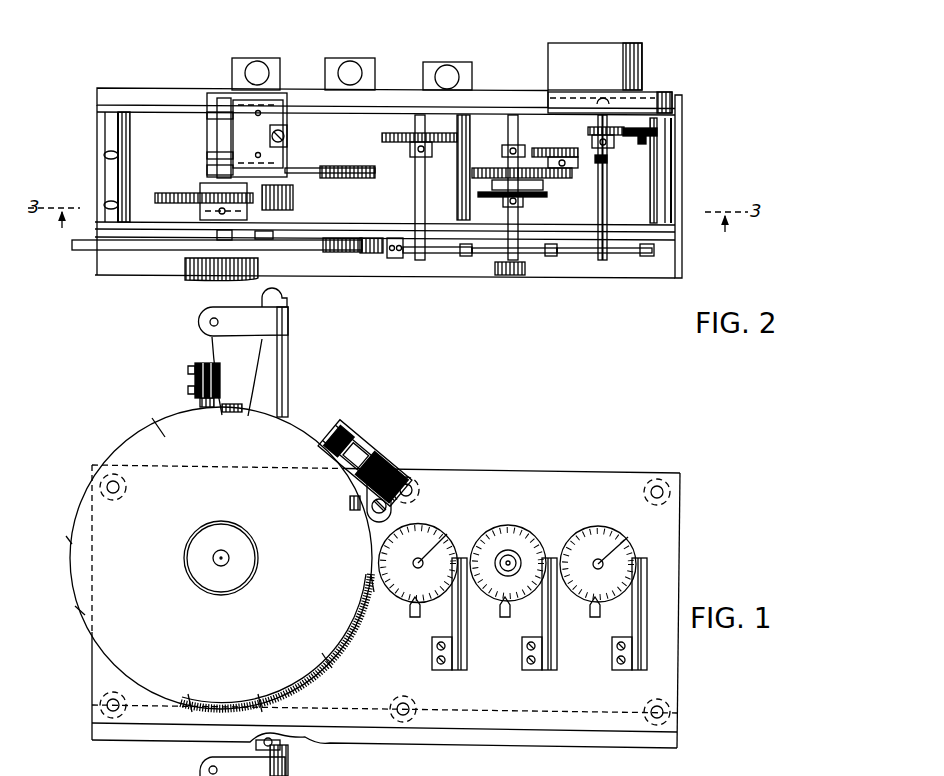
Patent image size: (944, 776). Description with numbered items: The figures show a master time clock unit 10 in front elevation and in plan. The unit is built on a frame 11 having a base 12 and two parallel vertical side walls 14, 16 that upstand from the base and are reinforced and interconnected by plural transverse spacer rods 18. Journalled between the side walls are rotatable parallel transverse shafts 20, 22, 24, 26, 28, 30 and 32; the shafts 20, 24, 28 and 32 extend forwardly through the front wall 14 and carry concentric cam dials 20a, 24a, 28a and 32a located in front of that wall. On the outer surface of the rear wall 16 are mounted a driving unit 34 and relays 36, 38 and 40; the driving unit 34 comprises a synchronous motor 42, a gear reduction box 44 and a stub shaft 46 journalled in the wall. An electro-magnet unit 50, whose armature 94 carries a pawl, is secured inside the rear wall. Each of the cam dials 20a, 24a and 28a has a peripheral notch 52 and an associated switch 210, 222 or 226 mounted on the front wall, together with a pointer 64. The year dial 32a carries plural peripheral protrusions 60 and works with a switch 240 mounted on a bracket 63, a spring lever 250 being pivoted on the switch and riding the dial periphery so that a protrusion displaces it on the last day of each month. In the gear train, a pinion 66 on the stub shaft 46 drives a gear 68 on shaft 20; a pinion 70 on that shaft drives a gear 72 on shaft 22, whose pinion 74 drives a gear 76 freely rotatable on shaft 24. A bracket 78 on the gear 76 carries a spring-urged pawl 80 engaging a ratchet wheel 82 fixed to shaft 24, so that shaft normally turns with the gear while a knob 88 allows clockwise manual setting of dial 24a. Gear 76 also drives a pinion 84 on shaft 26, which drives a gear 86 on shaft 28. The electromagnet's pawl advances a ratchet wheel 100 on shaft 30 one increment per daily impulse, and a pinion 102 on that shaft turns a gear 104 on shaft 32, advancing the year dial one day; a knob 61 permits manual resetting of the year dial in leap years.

In FIG. 2, the master time clock unit 10 is at (658, 280).
In FIG. 1, the master time clock unit 10 is at (575, 466).
In FIG. 2, the frame 11 is at (578, 293).
In FIG. 1, the frame 11 is at (682, 490).
In FIG. 2, the base 12 is at (668, 258).
In FIG. 1, the base 12 is at (660, 748).
In FIG. 2, the side wall 14 is at (668, 226).
In FIG. 1, the side wall 14 is at (672, 528).
In FIG. 2, the side wall 16 is at (672, 122).
In FIG. 2, the transverse spacer rods 18 is at (112, 152).
In FIG. 1, the transverse spacer rods 18 is at (105, 706).
In FIG. 2, the shaft 20 is at (607, 202).
In FIG. 1, the shaft 20 is at (640, 533).
In FIG. 2, the cam dial 20a is at (625, 257).
In FIG. 1, the cam dial 20a is at (590, 527).
In FIG. 2, the shaft 22 is at (566, 190).
In FIG. 2, the shaft 24 is at (519, 207).
In FIG. 1, the shaft 24 is at (538, 533).
In FIG. 2, the cam dial 24a is at (525, 257).
In FIG. 1, the cam dial 24a is at (495, 528).
In FIG. 2, the shaft 26 is at (462, 186).
In FIG. 2, the shaft 28 is at (415, 181).
In FIG. 1, the shaft 28 is at (447, 534).
In FIG. 2, the cam dial 28a is at (440, 257).
In FIG. 1, the cam dial 28a is at (418, 525).
In FIG. 2, the shaft 30 is at (282, 234).
In FIG. 2, the shaft 32 is at (218, 237).
In FIG. 1, the shaft 32 is at (221, 558).
In FIG. 2, the cam dial 32a is at (82, 247).
In FIG. 1, the cam dial 32a is at (348, 652).
In FIG. 2, the driving unit 34 is at (650, 50).
In FIG. 2, the relay 36 is at (432, 62).
In FIG. 2, the relay 38 is at (340, 58).
In FIG. 2, the relay 40 is at (246, 58).
In FIG. 2, the synchronous motor 42 is at (570, 45).
In FIG. 2, the gear reduction box 44 is at (655, 92).
In FIG. 2, the stub shaft 46 is at (646, 144).
In FIG. 2, the electro-magnet unit 50 is at (285, 97).
In FIG. 1, the electro-magnet unit 50 is at (288, 376).
In FIG. 1, the notch 52 is at (508, 531).
In FIG. 1, the protrusions 60 is at (158, 428).
In FIG. 2, the knob 61 is at (195, 279).
In FIG. 1, the knob 61 is at (203, 580).
In FIG. 1, the bracket 63 is at (392, 504).
In FIG. 1, the pointer 64 is at (414, 620).
In FIG. 2, the pinion 66 is at (628, 137).
In FIG. 2, the gear 68 is at (585, 131).
In FIG. 2, the pinion 70 is at (608, 163).
In FIG. 2, the gear 72 is at (552, 150).
In FIG. 2, the pinion 74 is at (572, 172).
In FIG. 2, the gear 76 is at (480, 168).
In FIG. 2, the bracket 78 is at (520, 168).
In FIG. 2, the pawl 80 is at (520, 184).
In FIG. 2, the ratchet wheel 82 is at (478, 194).
In FIG. 2, the pinion 84 is at (443, 150).
In FIG. 2, the gear 86 is at (382, 150).
In FIG. 2, the knob 88 is at (510, 277).
In FIG. 1, the knob 88 is at (512, 560).
In FIG. 2, the armature 94 is at (245, 126).
In FIG. 2, the ratchet wheel 100 is at (300, 168).
In FIG. 2, the pinion 102 is at (294, 192).
In FIG. 2, the gear 104 is at (168, 193).
In FIG. 1, the switch 210 is at (647, 665).
In FIG. 1, the switch 222 is at (557, 665).
In FIG. 1, the switch 226 is at (467, 665).
In FIG. 1, the switch 240 is at (388, 452).
In FIG. 1, the spring lever 250 is at (340, 447).